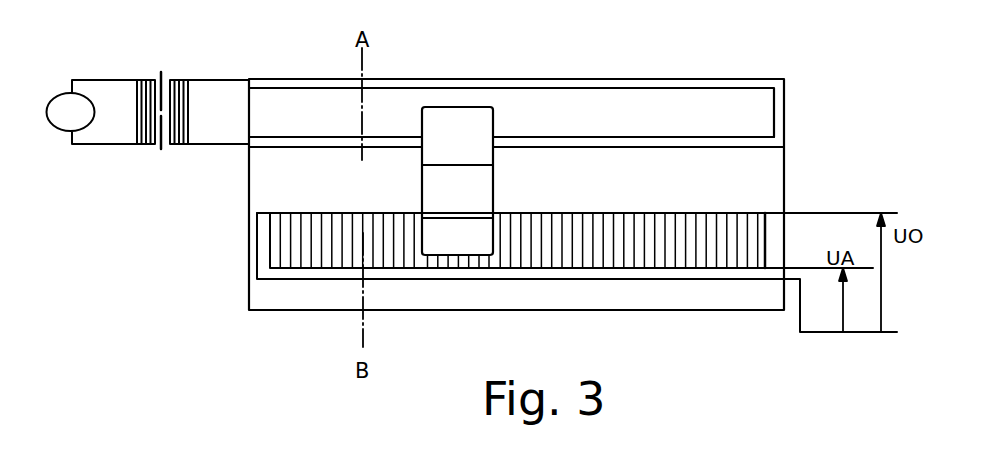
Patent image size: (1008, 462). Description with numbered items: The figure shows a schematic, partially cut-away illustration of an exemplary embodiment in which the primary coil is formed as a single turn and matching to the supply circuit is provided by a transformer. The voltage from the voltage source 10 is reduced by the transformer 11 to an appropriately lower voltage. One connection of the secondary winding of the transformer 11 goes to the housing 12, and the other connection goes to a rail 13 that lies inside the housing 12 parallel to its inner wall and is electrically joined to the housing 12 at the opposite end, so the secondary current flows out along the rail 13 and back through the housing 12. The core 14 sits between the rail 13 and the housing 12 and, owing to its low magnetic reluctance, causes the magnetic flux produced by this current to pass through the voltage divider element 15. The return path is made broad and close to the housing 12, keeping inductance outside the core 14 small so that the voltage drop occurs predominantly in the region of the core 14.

The voltage source 10 is at (58, 94).
The transformer 11 is at (145, 80).
The housing 12 is at (303, 79).
The rail 13 is at (297, 148).
The core 14 is at (472, 206).
The voltage divider element 15 is at (525, 213).